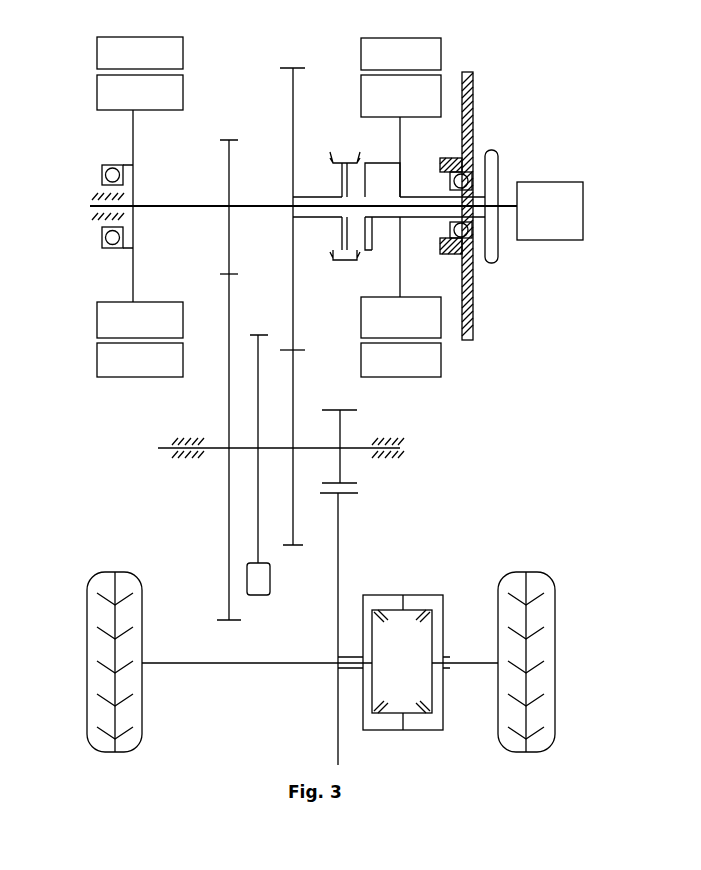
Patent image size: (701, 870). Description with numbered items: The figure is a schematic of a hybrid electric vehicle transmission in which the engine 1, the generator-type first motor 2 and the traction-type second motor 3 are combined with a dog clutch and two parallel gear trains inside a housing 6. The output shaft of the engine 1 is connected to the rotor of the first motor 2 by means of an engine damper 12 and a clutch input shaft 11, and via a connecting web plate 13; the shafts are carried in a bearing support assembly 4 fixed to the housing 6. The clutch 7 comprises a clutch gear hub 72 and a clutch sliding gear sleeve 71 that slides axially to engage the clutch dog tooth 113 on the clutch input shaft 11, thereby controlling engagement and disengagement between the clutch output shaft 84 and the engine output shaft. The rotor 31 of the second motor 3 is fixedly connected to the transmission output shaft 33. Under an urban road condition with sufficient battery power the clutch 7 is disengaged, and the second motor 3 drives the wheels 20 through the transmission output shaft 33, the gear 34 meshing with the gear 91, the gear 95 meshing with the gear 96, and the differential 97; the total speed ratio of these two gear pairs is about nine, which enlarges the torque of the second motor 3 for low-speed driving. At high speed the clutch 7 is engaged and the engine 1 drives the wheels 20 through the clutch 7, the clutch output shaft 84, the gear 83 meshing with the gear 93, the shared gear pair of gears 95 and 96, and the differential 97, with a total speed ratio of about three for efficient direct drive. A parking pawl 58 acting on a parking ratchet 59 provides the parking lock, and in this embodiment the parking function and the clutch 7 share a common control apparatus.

The engine 1 is at (548, 182).
The P1 motor 2 is at (438, 38).
The P3 motor 3 is at (119, 193).
The bearing support assembly 4 is at (465, 237).
The housing 6 is at (475, 330).
The clutch 7 is at (388, 111).
The clutch input shaft 11 is at (428, 196).
The engine damper 12 is at (492, 262).
The connecting web plate 13 is at (400, 272).
The wheel 20 is at (540, 575).
The rotor 31 is at (115, 97).
The transmission output shaft 33 is at (205, 206).
The gear 34 is at (178, 348).
The parking pawl 58 is at (247, 575).
The parking ratchet 59 is at (258, 335).
The clutch sliding gear sleeve 71 is at (358, 157).
The clutch gear hub 72 is at (342, 176).
The gear 83 is at (235, 283).
The clutch output shaft 84 is at (320, 216).
The gear 91 is at (220, 274).
The gear 93 is at (290, 350).
The gear 95 is at (357, 482).
The gear 96 is at (357, 493).
The differential 97 is at (390, 595).
The clutch dog tooth 113 is at (363, 165).